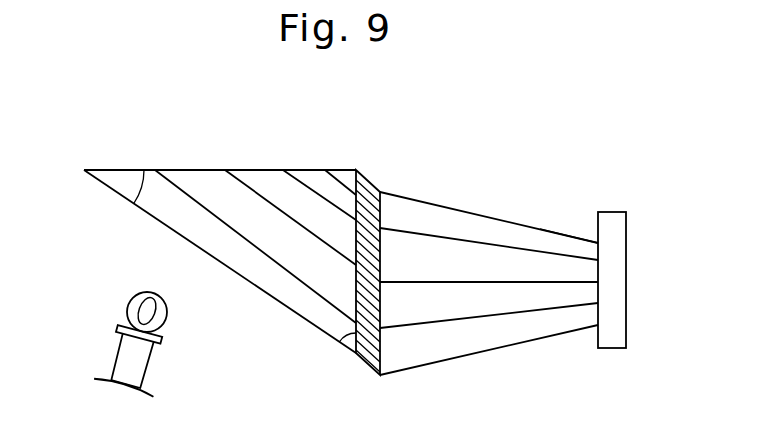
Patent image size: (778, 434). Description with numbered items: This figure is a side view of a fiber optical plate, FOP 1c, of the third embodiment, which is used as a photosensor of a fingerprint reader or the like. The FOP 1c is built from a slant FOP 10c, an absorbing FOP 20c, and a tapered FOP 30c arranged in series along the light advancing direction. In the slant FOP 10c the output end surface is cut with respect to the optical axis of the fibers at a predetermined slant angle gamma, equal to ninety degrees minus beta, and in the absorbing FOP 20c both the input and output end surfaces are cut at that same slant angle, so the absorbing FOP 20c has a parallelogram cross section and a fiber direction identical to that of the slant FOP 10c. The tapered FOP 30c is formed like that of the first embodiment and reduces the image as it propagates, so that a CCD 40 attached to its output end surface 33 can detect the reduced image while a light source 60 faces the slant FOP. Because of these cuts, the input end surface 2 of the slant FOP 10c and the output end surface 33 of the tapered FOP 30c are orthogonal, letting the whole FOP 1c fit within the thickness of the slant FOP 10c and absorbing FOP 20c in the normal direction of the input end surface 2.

The FOP 1c is at (538, 159).
The input end surface 2 is at (178, 170).
The slant FOP 10c is at (258, 170).
The absorbing FOP 20c is at (370, 176).
The tapered FOP 30c is at (508, 333).
The output end surface 33 is at (596, 248).
The CCD 40 is at (617, 218).
The light source 60 is at (175, 340).